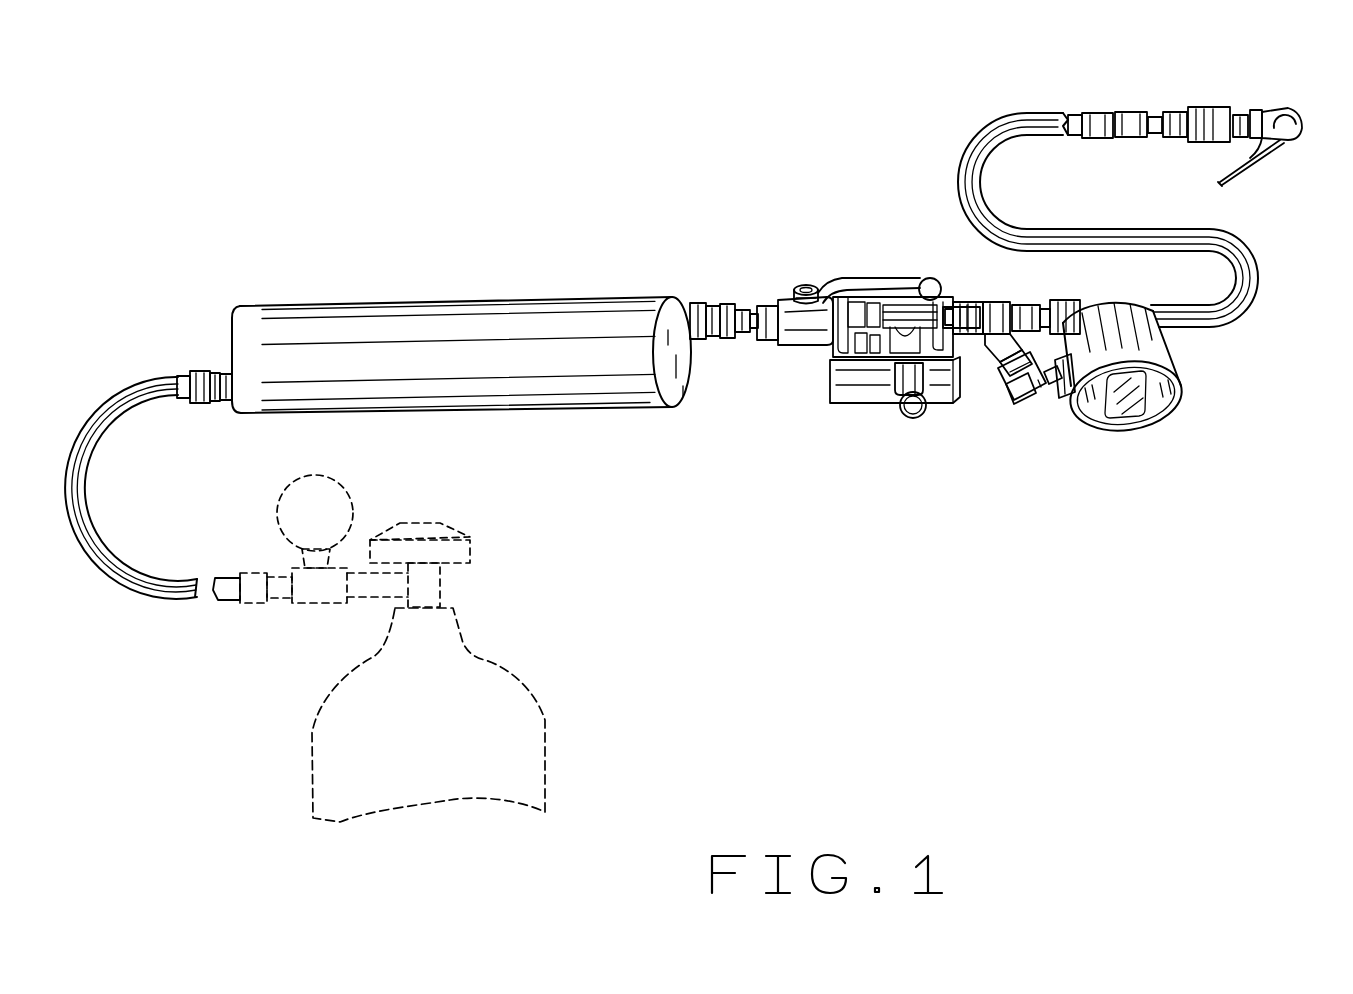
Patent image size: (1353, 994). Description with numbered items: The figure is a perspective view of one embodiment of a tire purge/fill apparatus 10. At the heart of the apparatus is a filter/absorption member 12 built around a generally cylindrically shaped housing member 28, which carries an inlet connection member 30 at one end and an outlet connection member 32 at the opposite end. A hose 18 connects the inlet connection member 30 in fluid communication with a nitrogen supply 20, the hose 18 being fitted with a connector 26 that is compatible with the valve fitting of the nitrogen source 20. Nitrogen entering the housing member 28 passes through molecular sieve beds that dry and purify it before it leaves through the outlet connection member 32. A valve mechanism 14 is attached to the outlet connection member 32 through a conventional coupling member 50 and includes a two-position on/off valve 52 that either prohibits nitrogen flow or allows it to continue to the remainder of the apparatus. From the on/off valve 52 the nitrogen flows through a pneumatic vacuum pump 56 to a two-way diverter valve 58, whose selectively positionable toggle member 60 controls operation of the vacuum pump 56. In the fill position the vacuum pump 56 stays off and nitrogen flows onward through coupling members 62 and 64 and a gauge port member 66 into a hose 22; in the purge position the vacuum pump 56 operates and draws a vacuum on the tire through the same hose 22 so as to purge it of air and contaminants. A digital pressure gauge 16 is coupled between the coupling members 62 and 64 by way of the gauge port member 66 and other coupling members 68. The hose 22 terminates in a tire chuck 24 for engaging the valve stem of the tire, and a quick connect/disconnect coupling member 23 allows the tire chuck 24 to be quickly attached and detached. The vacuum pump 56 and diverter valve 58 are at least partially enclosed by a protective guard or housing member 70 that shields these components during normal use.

The tire purge/fill apparatus 10 is at (741, 112).
The filter/absorption member 12 is at (461, 308).
The valve mechanism 14 is at (859, 352).
The digital pressure gauge 16 is at (1153, 420).
The hose 18 is at (88, 500).
The nitrogen supply 20 is at (523, 697).
The hose 22 is at (1260, 264).
The quick connect/disconnect coupling member 23 is at (1135, 108).
The tire chuck 24 is at (1290, 112).
The connector 26 is at (250, 603).
The housing member 28 is at (482, 305).
The inlet connection member 30 is at (200, 368).
The outlet connection member 32 is at (693, 306).
The coupling member 50 is at (767, 306).
The on/off valve 52 is at (797, 348).
The pneumatic vacuum pump 56 is at (907, 300).
The two-way diverter valve 58 is at (900, 388).
The toggle member 60 is at (918, 418).
The coupling member 62 is at (963, 302).
The coupling member 64 is at (1060, 300).
The gauge port member 66 is at (1000, 302).
The coupling member 68 is at (1000, 390).
The protective guard or housing member 70 is at (845, 403).